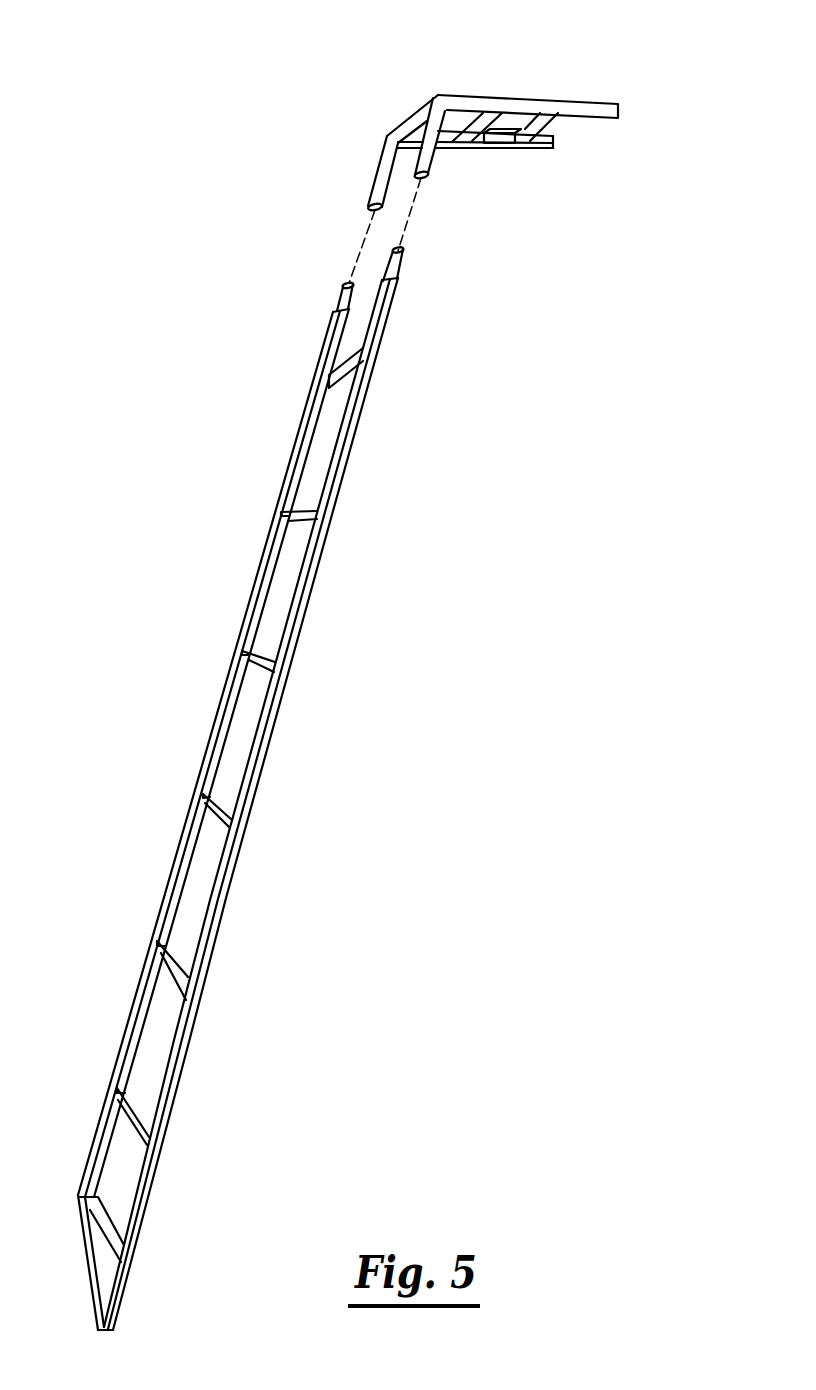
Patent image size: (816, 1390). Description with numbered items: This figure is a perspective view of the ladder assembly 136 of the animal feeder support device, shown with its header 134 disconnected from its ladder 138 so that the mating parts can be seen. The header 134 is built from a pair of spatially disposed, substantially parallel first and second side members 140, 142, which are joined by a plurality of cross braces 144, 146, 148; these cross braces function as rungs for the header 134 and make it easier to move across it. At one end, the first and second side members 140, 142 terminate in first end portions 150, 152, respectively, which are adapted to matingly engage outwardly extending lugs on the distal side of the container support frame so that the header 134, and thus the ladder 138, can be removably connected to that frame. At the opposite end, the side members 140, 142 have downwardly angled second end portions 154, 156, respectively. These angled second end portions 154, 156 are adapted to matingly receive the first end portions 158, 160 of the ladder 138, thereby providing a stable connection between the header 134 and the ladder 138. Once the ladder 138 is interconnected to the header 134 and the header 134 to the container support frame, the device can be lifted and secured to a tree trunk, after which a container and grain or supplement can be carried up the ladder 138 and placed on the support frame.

The header 134 is at (515, 92).
The ladder assembly 136 is at (512, 231).
The ladder 138 is at (309, 622).
The first side member 140 is at (478, 145).
The second side member 142 is at (548, 103).
The cross brace 144 is at (556, 133).
The cross brace 146 is at (481, 137).
The cross brace 148 is at (408, 117).
The first end portion 150 is at (558, 141).
The first end portion 152 is at (610, 107).
The second end portion 154 is at (369, 181).
The second end portion 156 is at (433, 174).
The first end portion 158 is at (342, 293).
The first end portion 160 is at (403, 273).